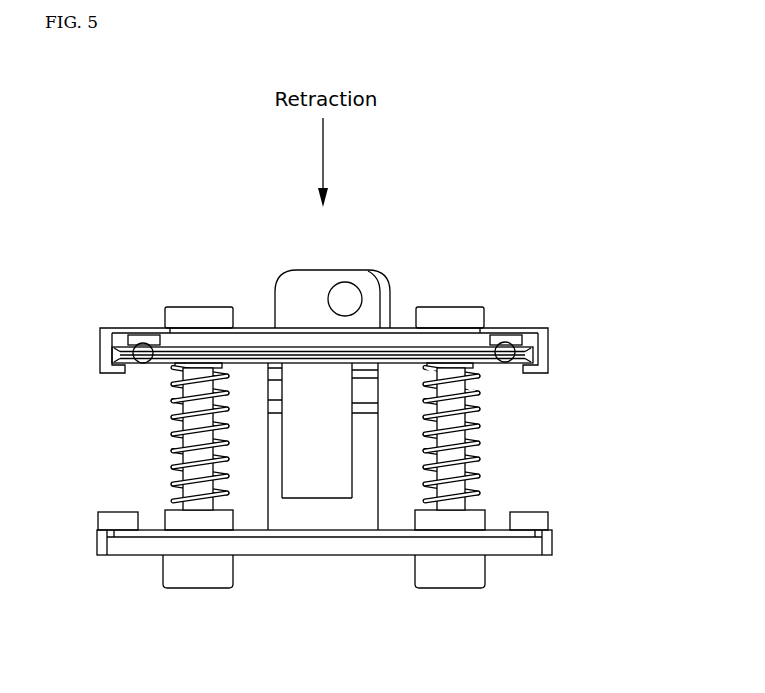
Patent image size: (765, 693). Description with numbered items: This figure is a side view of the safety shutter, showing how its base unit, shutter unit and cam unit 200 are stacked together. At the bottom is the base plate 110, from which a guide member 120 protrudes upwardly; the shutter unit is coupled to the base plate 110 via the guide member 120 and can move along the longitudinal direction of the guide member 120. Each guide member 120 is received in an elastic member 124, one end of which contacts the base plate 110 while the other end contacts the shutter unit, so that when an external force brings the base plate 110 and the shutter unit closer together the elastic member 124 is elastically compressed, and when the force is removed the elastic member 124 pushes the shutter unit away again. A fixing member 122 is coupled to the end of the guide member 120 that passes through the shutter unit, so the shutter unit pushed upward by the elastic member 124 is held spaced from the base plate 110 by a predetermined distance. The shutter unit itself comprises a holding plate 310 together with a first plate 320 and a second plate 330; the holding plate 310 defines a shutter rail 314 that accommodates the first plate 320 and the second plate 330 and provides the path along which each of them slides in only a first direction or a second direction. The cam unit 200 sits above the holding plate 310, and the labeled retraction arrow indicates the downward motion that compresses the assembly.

The base plate 110 is at (317, 548).
The guide member 120 is at (458, 460).
The fixing member 122 is at (193, 315).
The elastic member 124 is at (468, 425).
The cam unit 200 is at (404, 272).
The holding plate 310 is at (508, 328).
The shutter rail 314 is at (549, 352).
The first plate 320 is at (141, 348).
The second plate 330 is at (145, 363).